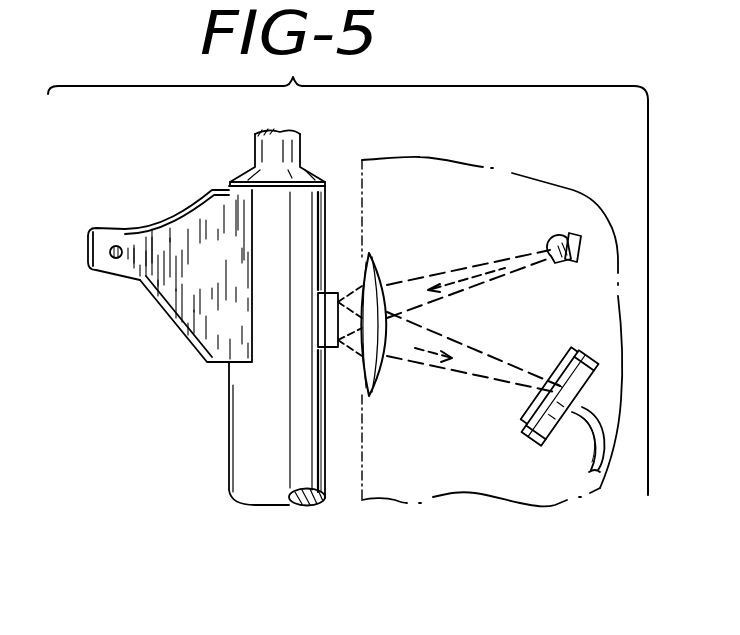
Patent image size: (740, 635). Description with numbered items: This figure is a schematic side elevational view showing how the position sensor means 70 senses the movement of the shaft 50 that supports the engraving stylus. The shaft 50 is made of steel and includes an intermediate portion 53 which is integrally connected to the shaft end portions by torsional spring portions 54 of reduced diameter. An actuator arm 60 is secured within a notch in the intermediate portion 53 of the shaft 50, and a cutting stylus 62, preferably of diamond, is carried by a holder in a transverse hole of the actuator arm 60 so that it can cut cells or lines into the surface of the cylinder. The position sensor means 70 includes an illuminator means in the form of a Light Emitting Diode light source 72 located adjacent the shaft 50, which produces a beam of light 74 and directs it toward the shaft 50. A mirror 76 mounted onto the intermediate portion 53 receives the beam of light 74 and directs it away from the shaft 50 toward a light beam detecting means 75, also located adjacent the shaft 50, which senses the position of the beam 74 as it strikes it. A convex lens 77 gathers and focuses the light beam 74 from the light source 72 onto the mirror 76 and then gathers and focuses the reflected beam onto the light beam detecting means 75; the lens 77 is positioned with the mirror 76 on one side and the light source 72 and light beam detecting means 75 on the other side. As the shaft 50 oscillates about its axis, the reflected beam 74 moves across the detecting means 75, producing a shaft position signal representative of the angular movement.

The shaft 50 is at (220, 316).
The intermediate portion 53 is at (246, 423).
The torsional spring portions 54 is at (300, 145).
The actuator arm 60 is at (160, 249).
The cutting stylus 62 is at (116, 246).
The position sensor means 70 is at (448, 406).
The light source 72 is at (557, 244).
The beam of light 74 is at (470, 266).
The light beam detecting means 75 is at (562, 360).
The mirror 76 is at (336, 348).
The convex lens 77 is at (381, 264).